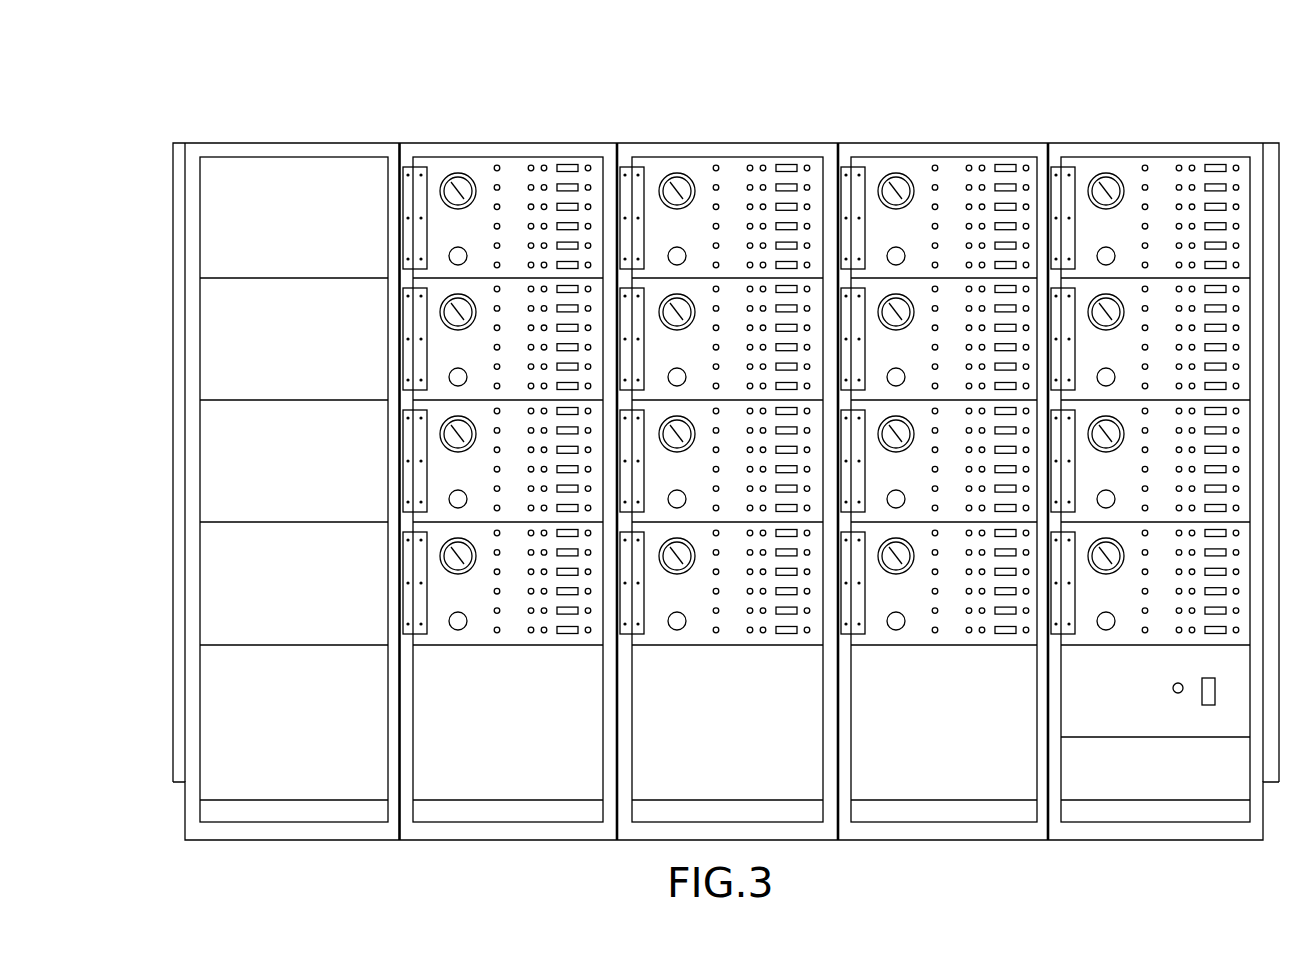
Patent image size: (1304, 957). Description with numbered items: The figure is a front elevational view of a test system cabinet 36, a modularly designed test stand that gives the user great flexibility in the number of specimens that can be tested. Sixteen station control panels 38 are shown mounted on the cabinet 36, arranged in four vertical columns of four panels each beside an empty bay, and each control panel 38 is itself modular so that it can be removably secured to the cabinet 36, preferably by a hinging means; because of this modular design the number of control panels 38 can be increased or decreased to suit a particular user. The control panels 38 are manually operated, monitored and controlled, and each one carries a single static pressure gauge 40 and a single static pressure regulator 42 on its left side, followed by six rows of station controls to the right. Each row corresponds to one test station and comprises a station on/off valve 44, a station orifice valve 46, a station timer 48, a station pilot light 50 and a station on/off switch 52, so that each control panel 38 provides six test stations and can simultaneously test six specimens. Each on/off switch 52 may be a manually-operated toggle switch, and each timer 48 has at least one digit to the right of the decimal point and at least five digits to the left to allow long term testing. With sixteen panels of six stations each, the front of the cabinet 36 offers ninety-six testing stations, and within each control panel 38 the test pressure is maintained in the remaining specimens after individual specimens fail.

The test system cabinet 36 is at (166, 592).
The station control panel 38 is at (826, 371).
The static pressure gauge 40 is at (675, 172).
The static pressure regulator 42 is at (672, 249).
The station on/off valve 44 is at (715, 165).
The station orifice valve 46 is at (749, 165).
The station timer 48 is at (788, 164).
The station pilot light 50 is at (763, 165).
The station on/off switch 52 is at (808, 165).